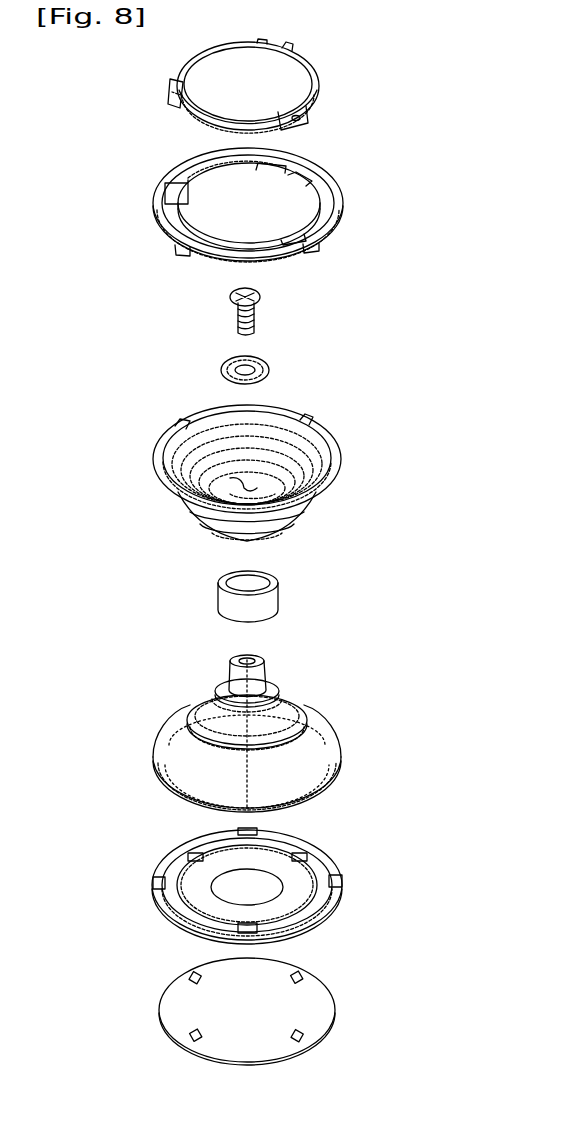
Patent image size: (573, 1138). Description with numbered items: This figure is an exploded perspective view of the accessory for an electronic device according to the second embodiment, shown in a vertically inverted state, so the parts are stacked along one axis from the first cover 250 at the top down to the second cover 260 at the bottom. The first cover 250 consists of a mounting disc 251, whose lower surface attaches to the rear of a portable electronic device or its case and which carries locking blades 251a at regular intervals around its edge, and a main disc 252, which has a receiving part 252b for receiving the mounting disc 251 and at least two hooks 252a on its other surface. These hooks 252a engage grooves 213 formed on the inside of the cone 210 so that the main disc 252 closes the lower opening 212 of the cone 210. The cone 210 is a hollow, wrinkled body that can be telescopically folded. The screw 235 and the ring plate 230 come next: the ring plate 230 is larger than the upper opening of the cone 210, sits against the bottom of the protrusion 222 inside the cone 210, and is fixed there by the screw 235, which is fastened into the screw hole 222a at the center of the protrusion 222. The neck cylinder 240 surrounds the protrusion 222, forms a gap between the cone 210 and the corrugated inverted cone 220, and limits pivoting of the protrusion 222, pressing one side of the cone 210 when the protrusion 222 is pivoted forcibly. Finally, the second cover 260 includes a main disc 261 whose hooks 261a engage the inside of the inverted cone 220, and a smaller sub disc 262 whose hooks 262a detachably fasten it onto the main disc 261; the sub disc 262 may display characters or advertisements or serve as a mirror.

The first cover 250 is at (445, 100).
The mounting disc 251 is at (290, 88).
The locking blades 251a is at (172, 93).
The main disc 252 is at (318, 175).
The hooks 252a is at (180, 253).
The receiving part 252b is at (185, 194).
The screw 235 is at (261, 298).
The ring plate 230 is at (270, 370).
The cone 210 is at (330, 483).
The grooves 213 is at (185, 425).
The lower opening 212 is at (236, 478).
The neck cylinder 240 is at (262, 606).
The inverted cone 220 is at (302, 750).
The protrusion 222 is at (225, 678).
The screw hole 222a is at (256, 663).
The second cover 260 is at (445, 910).
The main disc 261 is at (325, 905).
The hooks 261a is at (160, 880).
The sub disc 262 is at (315, 982).
The hooks 262a is at (190, 1037).